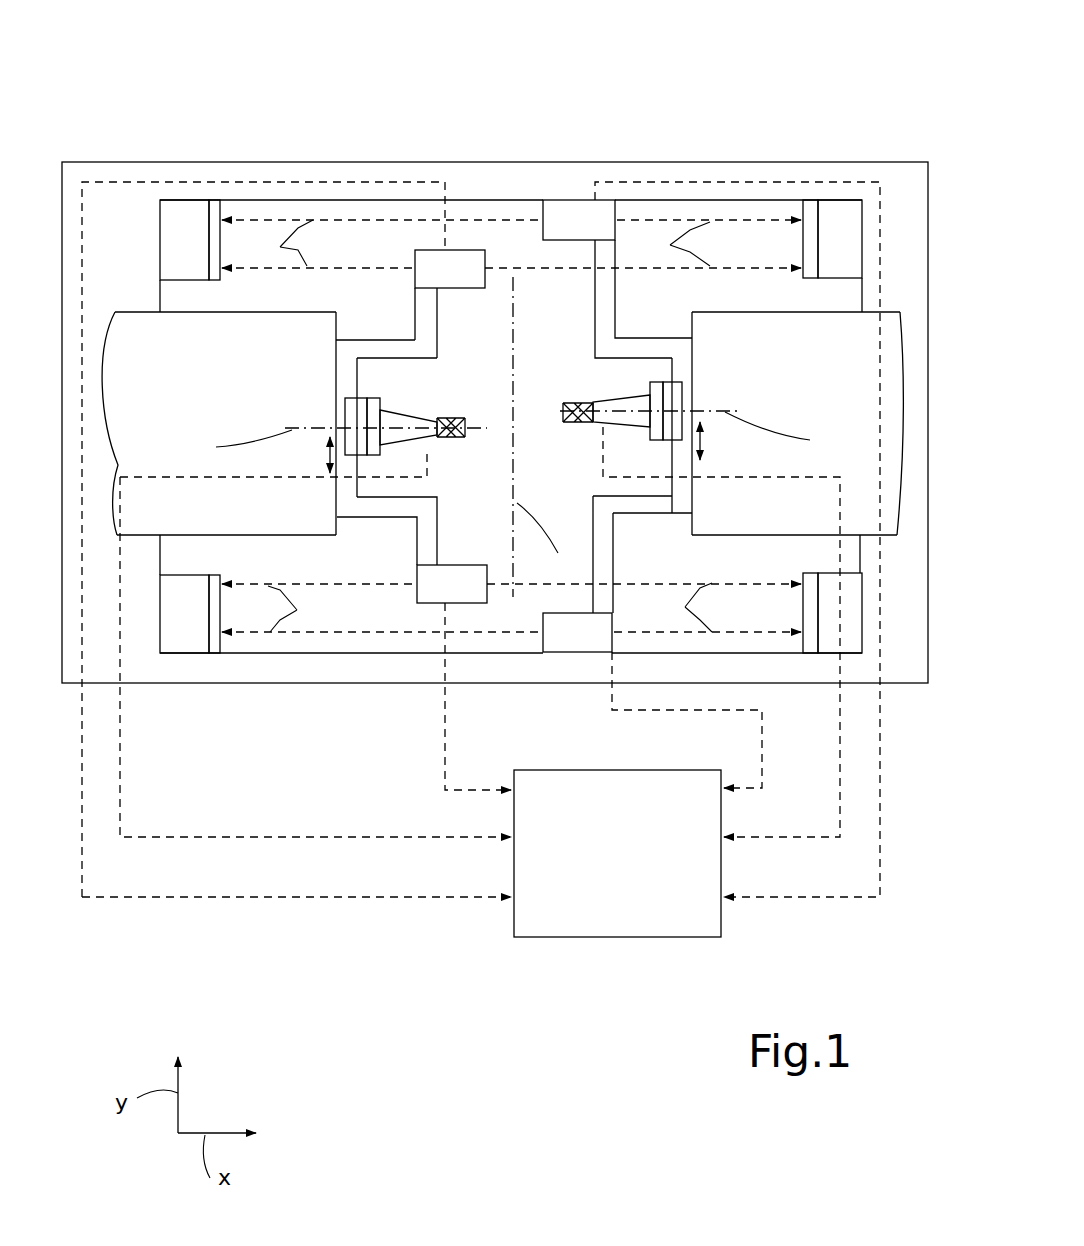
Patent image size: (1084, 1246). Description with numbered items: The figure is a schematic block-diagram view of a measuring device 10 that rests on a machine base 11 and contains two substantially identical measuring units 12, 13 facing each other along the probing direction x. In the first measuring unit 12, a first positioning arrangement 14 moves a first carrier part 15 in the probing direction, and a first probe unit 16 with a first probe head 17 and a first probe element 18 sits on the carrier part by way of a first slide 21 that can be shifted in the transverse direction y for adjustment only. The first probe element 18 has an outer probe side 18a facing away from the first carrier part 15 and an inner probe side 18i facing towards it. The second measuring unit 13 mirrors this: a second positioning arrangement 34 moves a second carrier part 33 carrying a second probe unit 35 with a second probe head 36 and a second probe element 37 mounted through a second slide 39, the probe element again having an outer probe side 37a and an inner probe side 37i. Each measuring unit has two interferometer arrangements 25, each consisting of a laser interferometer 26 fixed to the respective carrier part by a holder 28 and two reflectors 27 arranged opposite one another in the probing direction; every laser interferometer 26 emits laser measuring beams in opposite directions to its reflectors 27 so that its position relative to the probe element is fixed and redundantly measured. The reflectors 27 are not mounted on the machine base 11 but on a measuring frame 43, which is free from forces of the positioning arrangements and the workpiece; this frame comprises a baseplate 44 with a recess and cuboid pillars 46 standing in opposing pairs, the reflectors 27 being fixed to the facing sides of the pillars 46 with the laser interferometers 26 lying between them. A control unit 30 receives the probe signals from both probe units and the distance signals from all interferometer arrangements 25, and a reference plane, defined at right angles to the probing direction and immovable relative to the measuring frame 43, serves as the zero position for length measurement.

The measuring device 10 is at (846, 127).
The machine base 11 is at (504, 162).
The first measuring unit 12 is at (247, 140).
The second measuring unit 13 is at (743, 145).
The first positioning arrangement 14 is at (133, 293).
The first carrier part 15 is at (340, 358).
The first probe unit 16 is at (434, 393).
The first probe head 17 is at (422, 406).
The first probe element 18 is at (455, 445).
The outer probe side 18a is at (470, 415).
The inner probe side 18i is at (440, 456).
The first slide 21 is at (352, 420).
The interferometer arrangement 25 is at (423, 135).
The laser interferometer 26 is at (460, 267).
The reflector 27 is at (216, 220).
The holder 28 is at (383, 348).
The control unit 30 is at (645, 912).
The second carrier part 33 is at (688, 352).
The second positioning arrangement 34 is at (897, 298).
The second probe unit 35 is at (575, 376).
The second probe head 36 is at (672, 395).
The second probe element 37 is at (572, 430).
The outer probe side 37a is at (596, 385).
The inner probe side 37i is at (590, 425).
The second slide 39 is at (700, 392).
The measuring frame 43 is at (848, 557).
The baseplate 44 is at (280, 645).
The pillar 46 is at (178, 222).